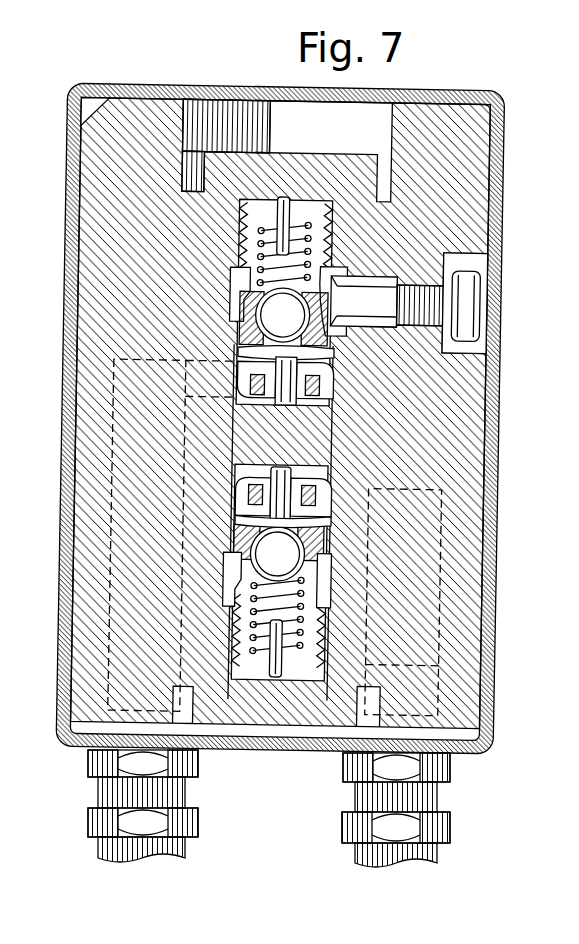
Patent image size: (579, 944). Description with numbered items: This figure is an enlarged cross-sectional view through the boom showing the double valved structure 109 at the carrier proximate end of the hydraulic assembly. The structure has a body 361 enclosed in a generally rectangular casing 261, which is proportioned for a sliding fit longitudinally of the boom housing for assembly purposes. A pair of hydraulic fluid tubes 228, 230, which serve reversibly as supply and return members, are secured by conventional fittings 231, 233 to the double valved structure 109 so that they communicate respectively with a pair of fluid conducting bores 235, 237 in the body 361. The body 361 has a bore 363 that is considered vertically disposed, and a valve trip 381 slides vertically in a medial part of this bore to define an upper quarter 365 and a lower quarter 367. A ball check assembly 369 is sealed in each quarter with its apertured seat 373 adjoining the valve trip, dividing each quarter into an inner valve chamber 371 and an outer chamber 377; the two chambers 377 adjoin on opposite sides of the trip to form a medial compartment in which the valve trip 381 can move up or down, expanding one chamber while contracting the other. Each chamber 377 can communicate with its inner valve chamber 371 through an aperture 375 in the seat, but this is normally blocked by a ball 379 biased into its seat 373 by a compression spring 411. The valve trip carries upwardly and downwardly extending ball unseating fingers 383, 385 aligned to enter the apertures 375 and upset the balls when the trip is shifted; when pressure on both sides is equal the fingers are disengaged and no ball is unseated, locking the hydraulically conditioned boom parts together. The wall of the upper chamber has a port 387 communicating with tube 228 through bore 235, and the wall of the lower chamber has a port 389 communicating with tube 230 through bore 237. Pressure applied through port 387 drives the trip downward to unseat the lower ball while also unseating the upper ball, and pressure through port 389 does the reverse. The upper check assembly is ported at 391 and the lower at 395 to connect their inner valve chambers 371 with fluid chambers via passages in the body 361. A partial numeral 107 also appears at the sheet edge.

The double valved structure 109 is at (157, 86).
The bore 363 is at (216, 100).
The casing 261 is at (440, 92).
The body 361 is at (472, 170).
The compression spring 411 is at (296, 225).
The inner valve chamber 371 is at (240, 233).
The ball check assembly 369 is at (343, 251).
The upper quarter 365 is at (228, 280).
The port 391 is at (247, 296).
The apertured seat 373 is at (331, 301).
The ball 379 is at (280, 435).
The port 387 is at (265, 356).
The aperture 375 is at (323, 333).
The outer chamber 377 is at (340, 360).
The ball unseating finger 383 is at (320, 382).
The valve trip 381 is at (322, 482).
The ball unseating finger 385 is at (305, 501).
The port 389 is at (245, 510).
The fluid conducting bore 235 is at (110, 573).
The fluid conducting bore 237 is at (443, 582).
The port 395 is at (228, 592).
The lower quarter 367 is at (243, 632).
The fitting 231 is at (92, 776).
The fitting 233 is at (455, 771).
The hydraulic fluid tube 228 is at (123, 848).
The hydraulic fluid tube 230 is at (414, 858).
The conduit 107 is at (9, 386).